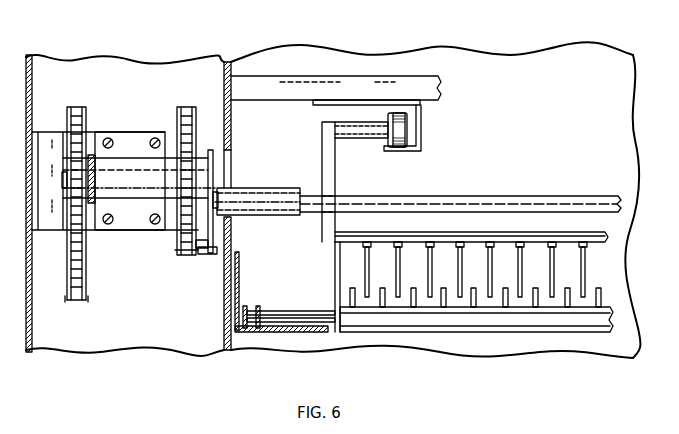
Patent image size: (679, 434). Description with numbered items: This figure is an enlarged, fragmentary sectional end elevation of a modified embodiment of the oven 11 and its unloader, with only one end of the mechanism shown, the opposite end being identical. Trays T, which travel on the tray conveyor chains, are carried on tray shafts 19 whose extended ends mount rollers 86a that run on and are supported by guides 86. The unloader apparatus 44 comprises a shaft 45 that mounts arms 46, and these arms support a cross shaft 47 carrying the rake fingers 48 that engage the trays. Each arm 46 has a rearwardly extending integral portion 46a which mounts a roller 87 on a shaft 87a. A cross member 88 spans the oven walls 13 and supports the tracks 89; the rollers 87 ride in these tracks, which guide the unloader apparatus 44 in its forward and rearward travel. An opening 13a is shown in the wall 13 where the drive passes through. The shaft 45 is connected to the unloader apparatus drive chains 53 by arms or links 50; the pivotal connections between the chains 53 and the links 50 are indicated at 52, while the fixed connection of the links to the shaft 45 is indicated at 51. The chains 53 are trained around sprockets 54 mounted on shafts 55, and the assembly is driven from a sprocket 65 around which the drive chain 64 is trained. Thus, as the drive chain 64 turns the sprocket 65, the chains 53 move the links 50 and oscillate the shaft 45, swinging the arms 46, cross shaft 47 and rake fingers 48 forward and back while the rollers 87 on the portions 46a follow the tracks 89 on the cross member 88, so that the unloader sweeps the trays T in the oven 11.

The oven 11 is at (34, 81).
The walls 13 is at (231, 64).
The opening in partition wall 13a is at (233, 165).
The shafts 55 is at (118, 160).
The sprockets 54 is at (208, 97).
The unloader apparatus drive chains 53 is at (178, 254).
The pivotal connections 52 is at (204, 258).
The fixed connection 51 is at (213, 196).
The arms 50 is at (213, 231).
The sprocket 65 is at (67, 252).
The drive chain 64 is at (69, 299).
The cross member 88 is at (441, 86).
The rollers 87 is at (405, 137).
The shafts 87a is at (400, 127).
The tracks 89 is at (422, 148).
The rearwardly extending integral portions 46a is at (324, 160).
The arms 46 is at (328, 218).
The unloader apparatus 44 is at (377, 189).
The shaft 45 is at (463, 203).
The cross shaft 47 is at (510, 234).
The rake fingers 48 is at (552, 272).
The tray shafts 19 is at (360, 325).
The trays T is at (484, 333).
The guides 86 is at (240, 300).
The rollers 86a is at (270, 306).